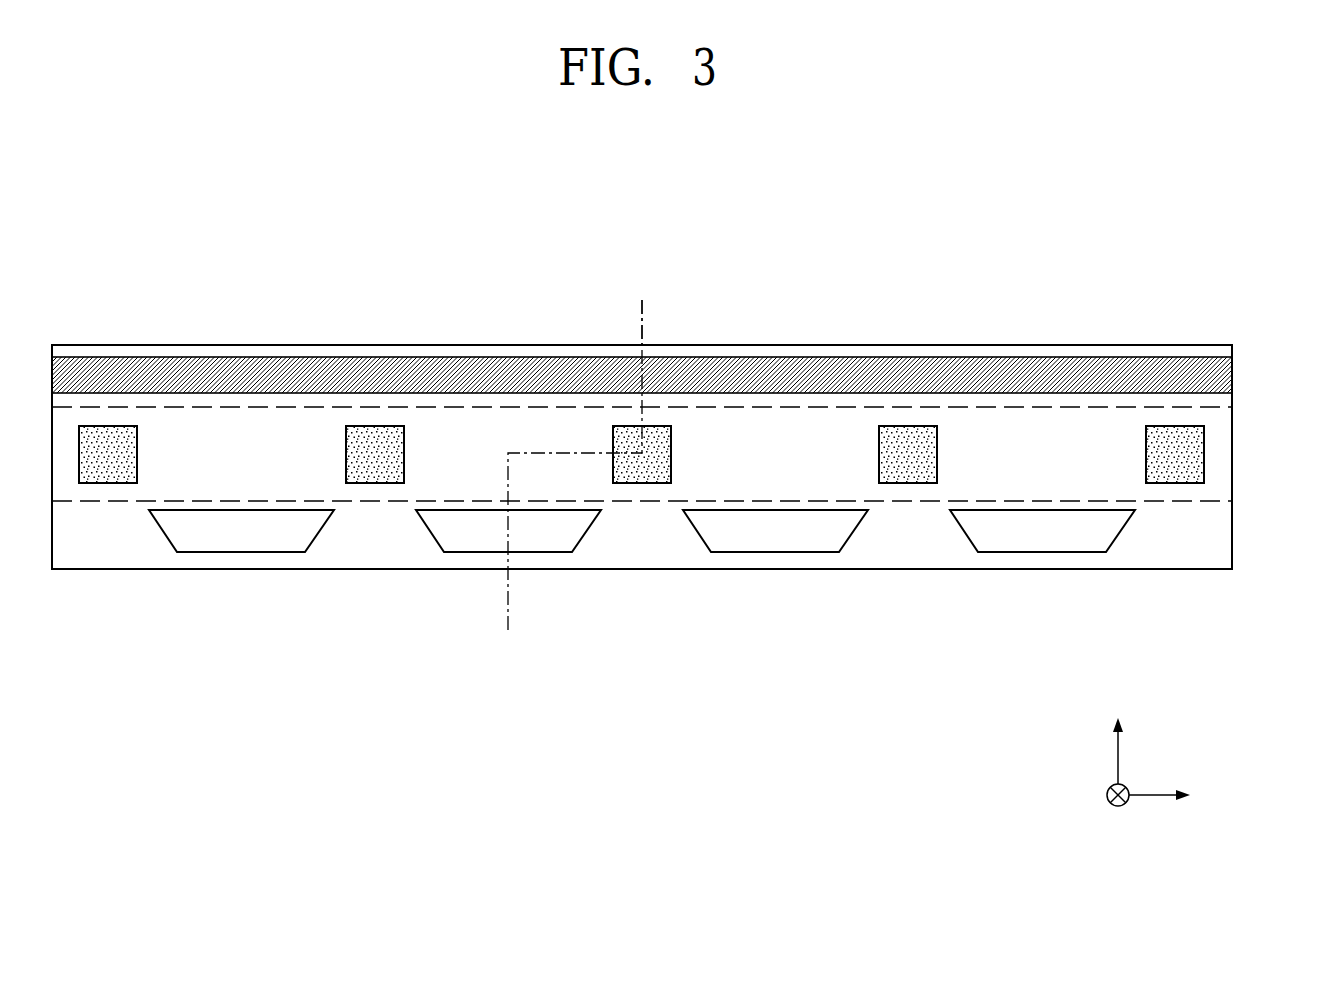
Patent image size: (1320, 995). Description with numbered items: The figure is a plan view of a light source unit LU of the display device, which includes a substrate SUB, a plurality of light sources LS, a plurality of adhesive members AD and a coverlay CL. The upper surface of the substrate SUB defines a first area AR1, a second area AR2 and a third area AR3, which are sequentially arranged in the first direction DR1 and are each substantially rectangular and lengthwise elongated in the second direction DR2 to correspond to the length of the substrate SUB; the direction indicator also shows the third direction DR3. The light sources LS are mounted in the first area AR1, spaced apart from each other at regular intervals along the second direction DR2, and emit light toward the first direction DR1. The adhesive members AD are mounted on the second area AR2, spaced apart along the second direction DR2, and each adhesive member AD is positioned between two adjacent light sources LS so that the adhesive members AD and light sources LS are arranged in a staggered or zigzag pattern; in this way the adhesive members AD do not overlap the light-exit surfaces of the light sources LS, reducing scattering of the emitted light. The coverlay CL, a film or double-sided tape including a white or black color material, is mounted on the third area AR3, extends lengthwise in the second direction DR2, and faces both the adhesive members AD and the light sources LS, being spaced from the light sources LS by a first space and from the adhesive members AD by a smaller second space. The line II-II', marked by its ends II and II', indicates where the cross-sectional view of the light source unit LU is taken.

The light source unit LU is at (1178, 277).
The substrate SUB is at (377, 570).
The coverlay CL is at (150, 370).
The first area AR1 is at (1222, 540).
The second area AR2 is at (1222, 457).
The third area AR3 is at (1222, 401).
The adhesive member AD is at (97, 475).
The light source LS is at (242, 538).
The section line II-II' II is at (575, 475).
The section line II- II' is at (685, 314).
The first direction DR1 is at (1117, 736).
The second direction DR2 is at (1180, 796).
The third direction DR3 is at (1117, 812).